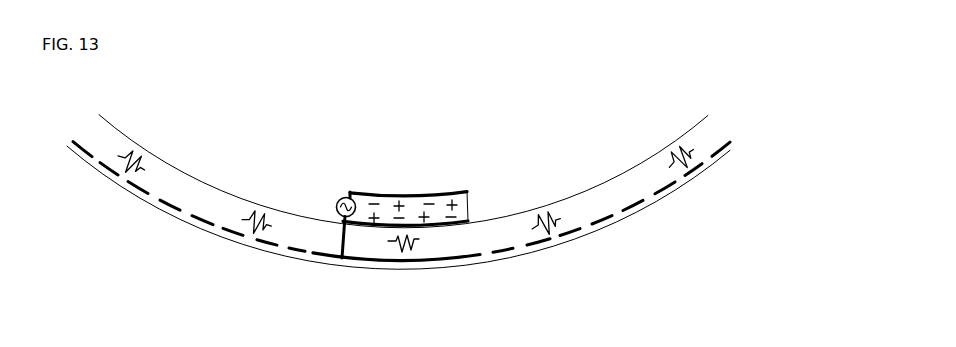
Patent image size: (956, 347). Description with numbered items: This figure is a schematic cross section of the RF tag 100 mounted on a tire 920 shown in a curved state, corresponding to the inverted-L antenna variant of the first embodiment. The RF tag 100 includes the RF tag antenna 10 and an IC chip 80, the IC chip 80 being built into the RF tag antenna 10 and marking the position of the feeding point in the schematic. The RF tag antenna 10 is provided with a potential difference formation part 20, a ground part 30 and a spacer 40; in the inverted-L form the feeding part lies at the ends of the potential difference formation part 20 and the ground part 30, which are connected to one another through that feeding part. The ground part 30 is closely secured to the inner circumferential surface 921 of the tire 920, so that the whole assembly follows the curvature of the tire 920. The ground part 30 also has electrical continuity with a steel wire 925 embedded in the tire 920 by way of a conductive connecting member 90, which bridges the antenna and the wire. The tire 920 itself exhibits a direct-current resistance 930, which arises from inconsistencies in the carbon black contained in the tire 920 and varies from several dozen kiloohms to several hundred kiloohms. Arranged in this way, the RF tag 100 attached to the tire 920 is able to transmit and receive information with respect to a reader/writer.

The RF tag 100 is at (452, 77).
The RF tag antenna 10 is at (453, 128).
The potential difference formation part 20 is at (366, 191).
The ground part 30 is at (395, 223).
The spacer 40 is at (425, 193).
The IC chip 80 is at (336, 208).
The conductive connecting member 90 is at (336, 242).
The tire 920 is at (183, 188).
The inner circumferential surface 921 is at (137, 144).
The steel wire 925 is at (505, 257).
The direct-current resistance 930 is at (545, 215).